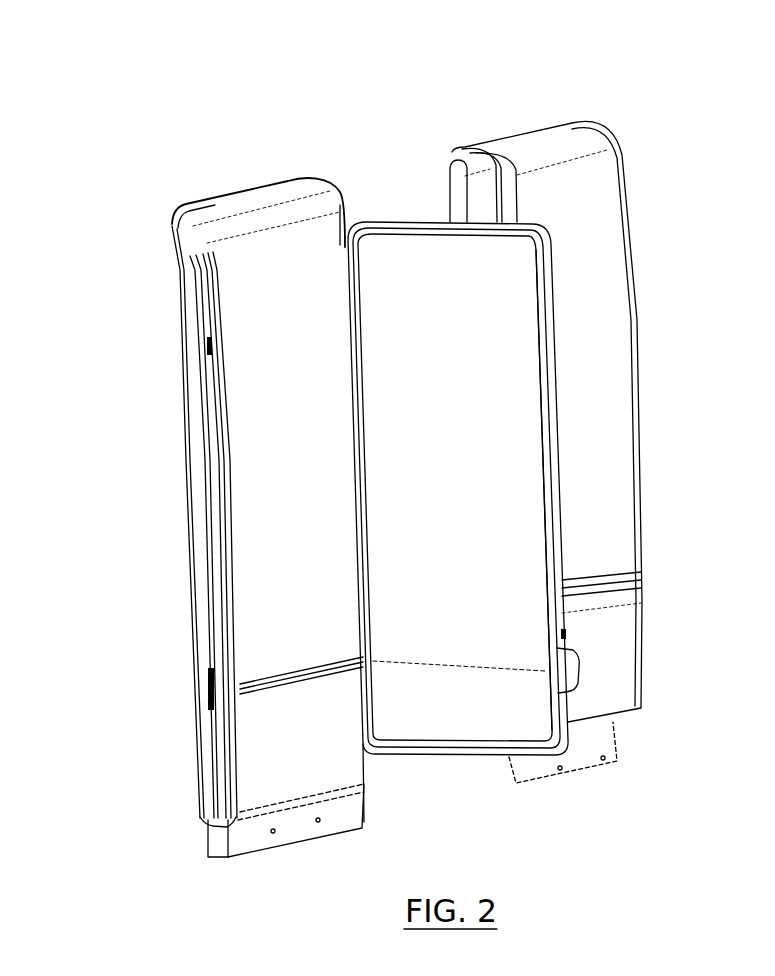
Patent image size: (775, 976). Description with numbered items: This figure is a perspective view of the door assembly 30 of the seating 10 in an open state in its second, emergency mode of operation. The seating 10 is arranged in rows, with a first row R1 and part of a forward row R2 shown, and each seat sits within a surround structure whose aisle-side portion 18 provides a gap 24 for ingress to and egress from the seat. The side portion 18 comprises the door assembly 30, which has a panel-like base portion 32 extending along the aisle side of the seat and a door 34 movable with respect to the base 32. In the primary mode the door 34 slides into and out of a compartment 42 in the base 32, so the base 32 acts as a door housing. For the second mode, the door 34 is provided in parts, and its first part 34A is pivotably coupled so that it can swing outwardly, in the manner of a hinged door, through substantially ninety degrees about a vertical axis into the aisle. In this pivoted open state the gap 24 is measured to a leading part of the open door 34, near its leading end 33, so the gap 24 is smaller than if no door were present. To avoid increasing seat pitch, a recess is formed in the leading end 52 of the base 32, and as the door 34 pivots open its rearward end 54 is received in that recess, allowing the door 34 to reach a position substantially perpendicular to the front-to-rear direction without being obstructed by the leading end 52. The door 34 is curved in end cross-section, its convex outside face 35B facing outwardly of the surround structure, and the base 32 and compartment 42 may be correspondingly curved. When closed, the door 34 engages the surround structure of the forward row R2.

The seating 10 is at (662, 117).
The side portion 18 is at (170, 231).
The gap 24 is at (405, 186).
The door assembly 30 is at (192, 729).
The base portion 32 is at (243, 206).
The leading end 33 is at (556, 553).
The door 34 is at (566, 634).
The first part 34A is at (528, 369).
The outside face 35B is at (482, 484).
The compartment 42 is at (349, 192).
The leading end 52 is at (347, 265).
The rearward end 54 is at (346, 245).
The first row R1 is at (201, 823).
The forward row R2 is at (637, 267).